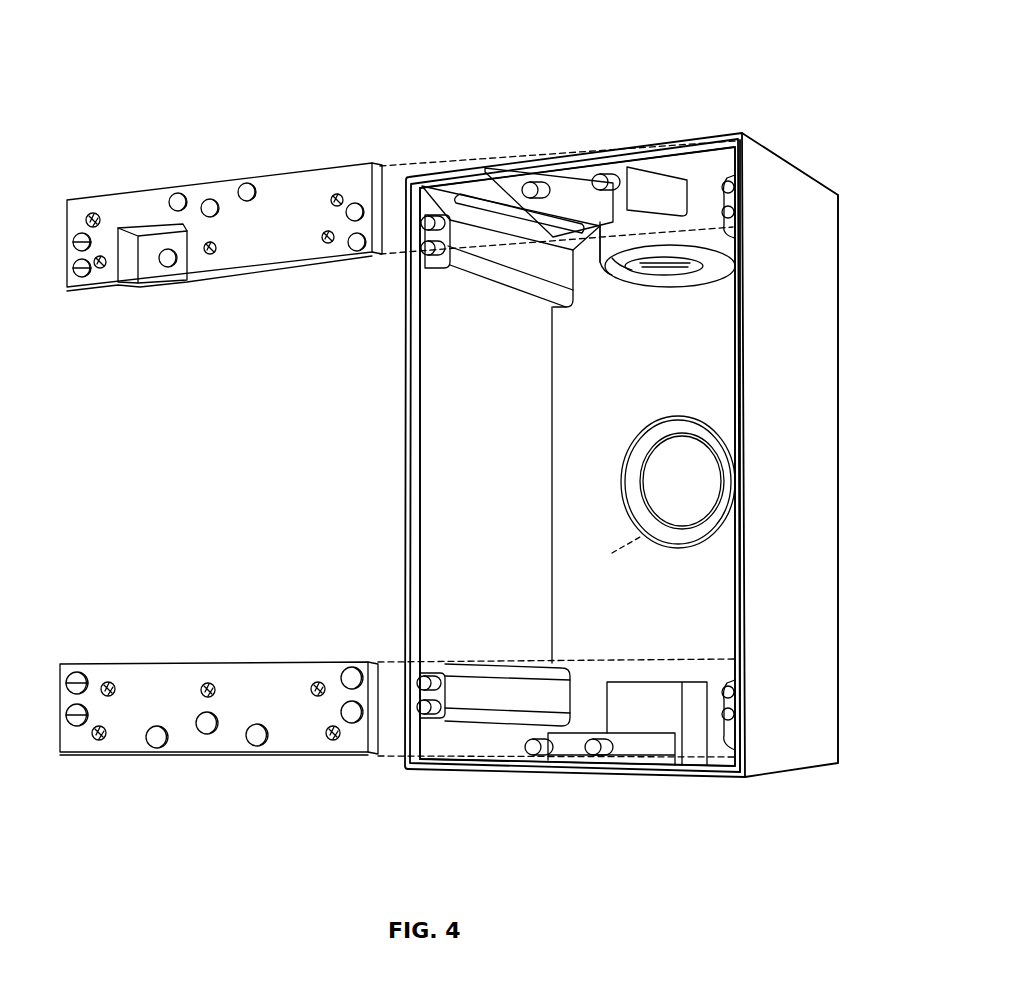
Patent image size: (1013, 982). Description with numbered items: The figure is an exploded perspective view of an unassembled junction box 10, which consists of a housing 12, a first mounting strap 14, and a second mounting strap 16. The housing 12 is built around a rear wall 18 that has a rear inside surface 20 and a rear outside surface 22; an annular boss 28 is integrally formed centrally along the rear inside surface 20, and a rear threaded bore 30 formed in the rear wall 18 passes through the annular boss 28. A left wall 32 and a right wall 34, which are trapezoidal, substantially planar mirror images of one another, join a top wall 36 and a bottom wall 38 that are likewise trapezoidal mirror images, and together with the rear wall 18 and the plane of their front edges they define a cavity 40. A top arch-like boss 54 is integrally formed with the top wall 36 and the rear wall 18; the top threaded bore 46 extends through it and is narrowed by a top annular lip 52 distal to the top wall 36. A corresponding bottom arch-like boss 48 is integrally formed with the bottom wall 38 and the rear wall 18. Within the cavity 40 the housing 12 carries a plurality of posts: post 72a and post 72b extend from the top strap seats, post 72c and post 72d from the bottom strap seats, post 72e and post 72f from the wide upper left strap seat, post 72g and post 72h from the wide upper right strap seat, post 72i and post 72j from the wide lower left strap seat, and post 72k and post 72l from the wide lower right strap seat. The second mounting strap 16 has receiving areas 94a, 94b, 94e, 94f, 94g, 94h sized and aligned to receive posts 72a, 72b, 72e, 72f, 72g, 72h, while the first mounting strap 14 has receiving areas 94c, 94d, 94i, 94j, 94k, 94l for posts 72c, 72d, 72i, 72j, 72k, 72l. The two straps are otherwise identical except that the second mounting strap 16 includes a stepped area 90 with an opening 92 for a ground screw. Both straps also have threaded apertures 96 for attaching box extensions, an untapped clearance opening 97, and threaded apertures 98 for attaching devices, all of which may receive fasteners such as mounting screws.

The junction box 10 is at (118, 50).
The housing 12 is at (557, 182).
The first mounting strap 14 is at (104, 786).
The second mounting strap 16 is at (92, 300).
The rear wall 18 is at (600, 516).
The rear inside surface 20 is at (735, 565).
The rear outside surface 22 is at (650, 527).
The annular boss 28 is at (625, 478).
The rear threaded bore 30 is at (652, 452).
The left wall 32 is at (422, 470).
The right wall 34 is at (836, 463).
The top wall 36 is at (706, 142).
The bottom wall 38 is at (648, 773).
The cavity 40 is at (703, 312).
The top threaded bore 46 is at (690, 262).
The bottom arch-like boss 48 is at (662, 690).
The top annular lip 52 is at (660, 270).
The top arch-like boss 54 is at (600, 268).
The post 72a is at (530, 182).
The post 72b is at (600, 176).
The post 72c is at (533, 755).
The post 72d is at (595, 755).
The post 72e is at (430, 252).
The post 72f is at (428, 218).
The post 72g is at (728, 208).
The post 72h is at (726, 183).
The post 72i is at (428, 712).
The post 72j is at (428, 682).
The post 72k is at (730, 718).
The post 72l is at (726, 690).
The stepped area 90 is at (150, 280).
The opening 92 is at (172, 266).
The receiving area 94a is at (178, 193).
The receiving area 94b is at (247, 183).
The receiving area 94c is at (157, 748).
The receiving area 94d is at (257, 746).
The receiving area 94e is at (73, 268).
The receiving area 94f is at (73, 242).
The receiving area 94g is at (357, 251).
The receiving area 94h is at (355, 203).
The receiving area 94i is at (67, 714).
The receiving area 94j is at (67, 681).
The receiving area 94k is at (353, 723).
The receiving area 94l is at (354, 667).
The threaded apertures 96 is at (93, 213).
The untapped clearance opening 97 is at (210, 199).
The threaded apertures 98 is at (100, 268).